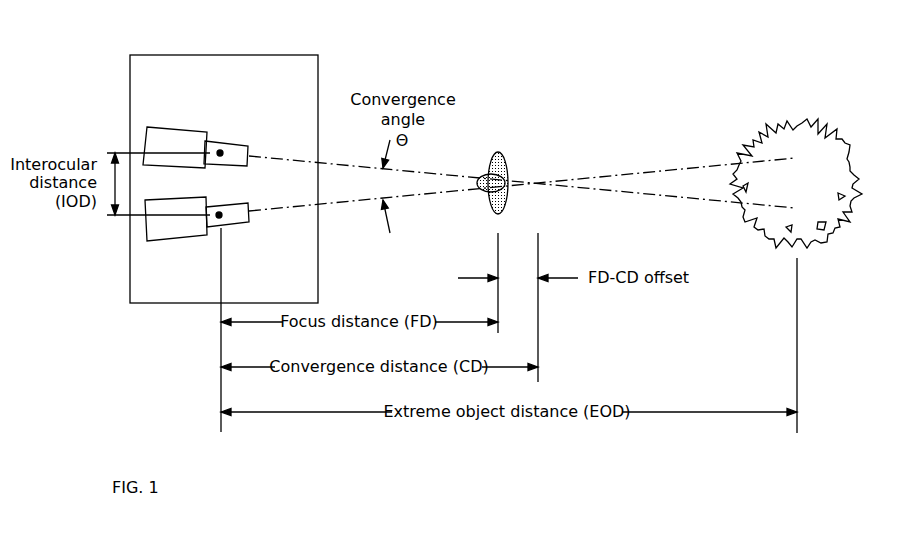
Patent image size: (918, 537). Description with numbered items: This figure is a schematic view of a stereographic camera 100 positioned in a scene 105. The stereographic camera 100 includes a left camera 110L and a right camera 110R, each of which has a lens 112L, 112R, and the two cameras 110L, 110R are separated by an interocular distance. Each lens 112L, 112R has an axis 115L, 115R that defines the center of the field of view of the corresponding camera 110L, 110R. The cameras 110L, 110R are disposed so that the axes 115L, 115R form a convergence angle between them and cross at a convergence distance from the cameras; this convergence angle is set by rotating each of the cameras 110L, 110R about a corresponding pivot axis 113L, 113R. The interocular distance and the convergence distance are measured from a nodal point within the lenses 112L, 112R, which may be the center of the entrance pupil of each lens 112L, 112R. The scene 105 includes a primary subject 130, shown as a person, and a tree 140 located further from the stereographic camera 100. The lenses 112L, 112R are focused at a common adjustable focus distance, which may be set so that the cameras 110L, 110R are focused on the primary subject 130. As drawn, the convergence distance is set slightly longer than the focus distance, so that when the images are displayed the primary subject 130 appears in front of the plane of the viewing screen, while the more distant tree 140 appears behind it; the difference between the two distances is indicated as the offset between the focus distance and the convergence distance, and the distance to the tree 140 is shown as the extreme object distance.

The stereographic camera 100 is at (224, 179).
The scene 105 is at (378, 35).
The left camera 110L is at (175, 128).
The right camera 110R is at (190, 240).
The lens 112L is at (220, 153).
The lens 112R is at (219, 215).
The pivot axis 113L is at (224, 146).
The pivot axis 113R is at (222, 222).
The axis 115L is at (625, 192).
The axis 115R is at (625, 175).
The primary subject 130 is at (498, 153).
The tree 140 is at (800, 122).